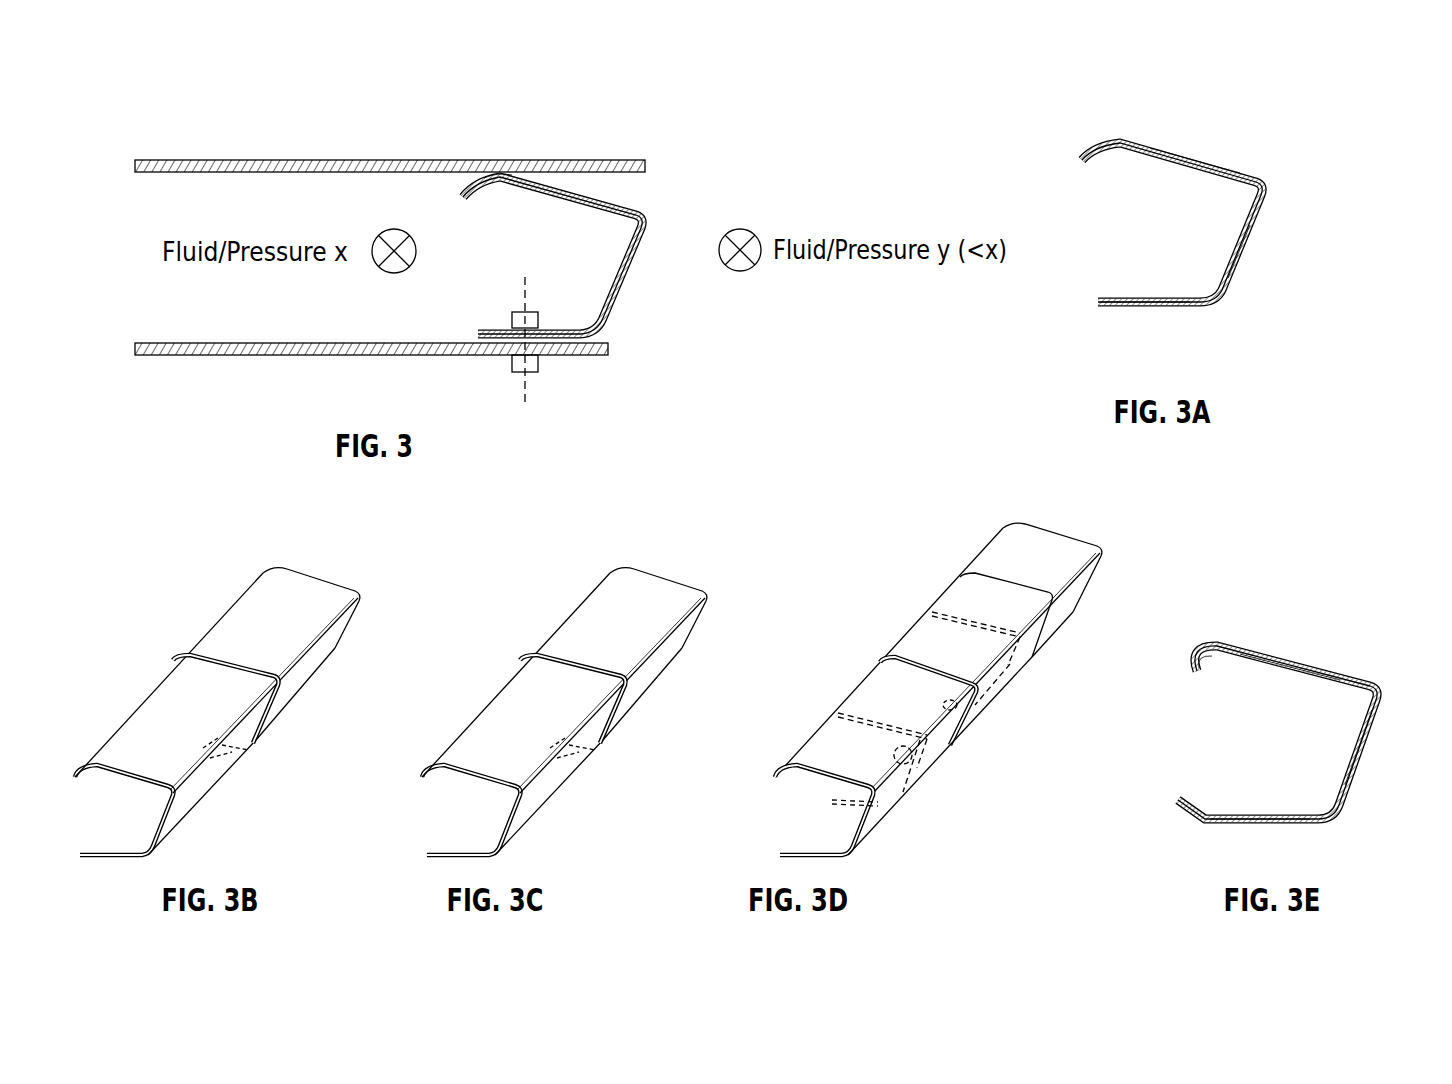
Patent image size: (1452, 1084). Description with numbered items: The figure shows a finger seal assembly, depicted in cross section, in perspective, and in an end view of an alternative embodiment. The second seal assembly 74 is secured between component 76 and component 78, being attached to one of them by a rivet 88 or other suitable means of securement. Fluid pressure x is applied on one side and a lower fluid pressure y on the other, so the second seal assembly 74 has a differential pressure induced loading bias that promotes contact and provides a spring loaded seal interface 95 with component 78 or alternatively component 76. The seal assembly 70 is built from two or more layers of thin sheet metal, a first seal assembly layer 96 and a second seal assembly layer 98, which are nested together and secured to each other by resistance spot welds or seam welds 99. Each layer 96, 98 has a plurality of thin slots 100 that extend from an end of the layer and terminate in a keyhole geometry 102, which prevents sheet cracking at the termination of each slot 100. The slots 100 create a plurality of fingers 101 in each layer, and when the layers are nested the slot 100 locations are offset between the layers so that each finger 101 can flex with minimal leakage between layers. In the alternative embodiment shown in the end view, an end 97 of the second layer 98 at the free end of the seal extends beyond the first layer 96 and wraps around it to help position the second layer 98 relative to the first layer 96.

In FIG. 3A, the seal assembly 70 is at (1261, 161).
In FIG. 3D, the seal assembly 70 is at (1094, 611).
In FIG. 3E, the seal assembly 70 is at (1384, 671).
In FIG. 3, the second seal assembly 74 is at (633, 287).
In FIG. 3, the component 76 is at (298, 359).
In FIG. 3, the component 78 is at (284, 157).
In FIG. 3, the rivet 88 is at (546, 376).
In FIG. 3, the spring loaded seal interface 95 is at (509, 167).
In FIG. 3A, the first seal assembly layer 96 is at (1216, 271).
In FIG. 3B, the first seal assembly layer 96 is at (349, 571).
In FIG. 3D, the first seal assembly layer 96 is at (1074, 556).
In FIG. 3E, the first seal assembly layer 96 is at (1332, 684).
In FIG. 3E, the end of second layer 97 is at (1213, 668).
In FIG. 3A, the second seal assembly layer 98 is at (1203, 151).
In FIG. 3C, the second seal assembly layer 98 is at (704, 571).
In FIG. 3D, the second seal assembly layer 98 is at (873, 816).
In FIG. 3E, the second seal assembly layer 98 is at (1361, 768).
In FIG. 3A, the seam welds 99 is at (1142, 292).
In FIG. 3E, the seam welds 99 is at (1253, 811).
In FIG. 3B, the slots 100 is at (293, 687).
In FIG. 3C, the slots 100 is at (473, 732).
In FIG. 3D, the slots 100 is at (1052, 605).
In FIG. 3B, the fingers 101 is at (317, 607).
In FIG. 3C, the fingers 101 is at (663, 607).
In FIG. 3D, the fingers 101 is at (1007, 548).
In FIG. 3B, the keyhole geometry 102 is at (248, 764).
In FIG. 3C, the keyhole geometry 102 is at (583, 763).